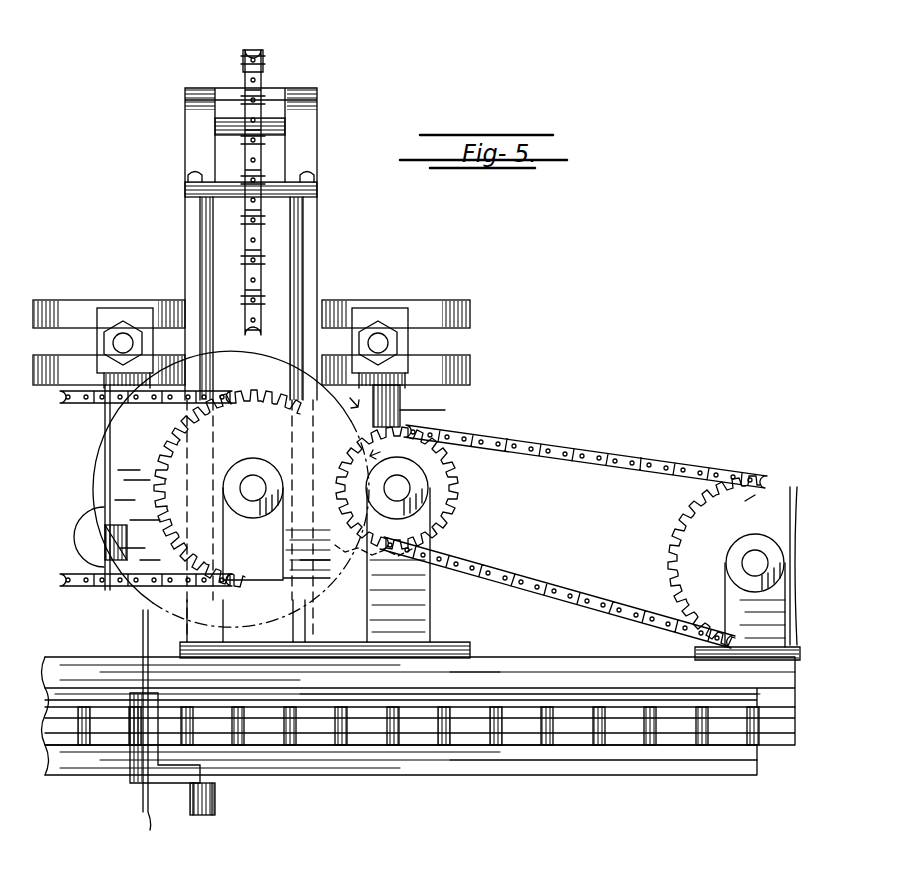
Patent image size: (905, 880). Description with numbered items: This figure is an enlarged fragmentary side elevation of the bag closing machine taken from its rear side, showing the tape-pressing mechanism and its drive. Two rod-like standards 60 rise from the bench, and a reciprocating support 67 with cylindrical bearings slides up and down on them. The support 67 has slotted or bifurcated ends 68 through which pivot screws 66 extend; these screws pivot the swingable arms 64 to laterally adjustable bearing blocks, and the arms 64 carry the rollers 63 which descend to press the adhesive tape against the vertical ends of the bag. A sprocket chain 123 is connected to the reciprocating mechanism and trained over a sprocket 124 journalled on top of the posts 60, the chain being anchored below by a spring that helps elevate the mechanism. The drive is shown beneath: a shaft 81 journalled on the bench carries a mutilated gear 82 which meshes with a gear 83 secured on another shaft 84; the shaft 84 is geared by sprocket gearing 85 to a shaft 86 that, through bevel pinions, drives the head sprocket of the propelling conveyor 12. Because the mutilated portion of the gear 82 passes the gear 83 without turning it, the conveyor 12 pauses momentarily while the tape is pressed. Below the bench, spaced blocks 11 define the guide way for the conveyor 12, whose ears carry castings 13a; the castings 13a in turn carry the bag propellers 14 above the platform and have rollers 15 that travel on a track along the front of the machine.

The spaced blocks 11 is at (540, 695).
The propelling conveyor 12 is at (633, 740).
The castings 13a is at (135, 735).
The bag propellers 14 is at (149, 815).
The rollers 15 is at (215, 797).
The rod-like standards 60 is at (190, 238).
The rollers 63 is at (96, 540).
The swingable arms 64 is at (105, 424).
The pivot screws 66 is at (123, 343).
The reciprocating support 67 is at (63, 305).
The slotted or bifurcated ends 68 is at (45, 340).
The shaft 81 is at (253, 488).
The mutilated gear 82 is at (182, 460).
The gear 83 is at (440, 490).
The shaft 84 is at (398, 490).
The chain 85 is at (570, 440).
The shaft 86 is at (755, 563).
The sprocket chain 123 is at (265, 105).
The sprocket 124 is at (250, 72).